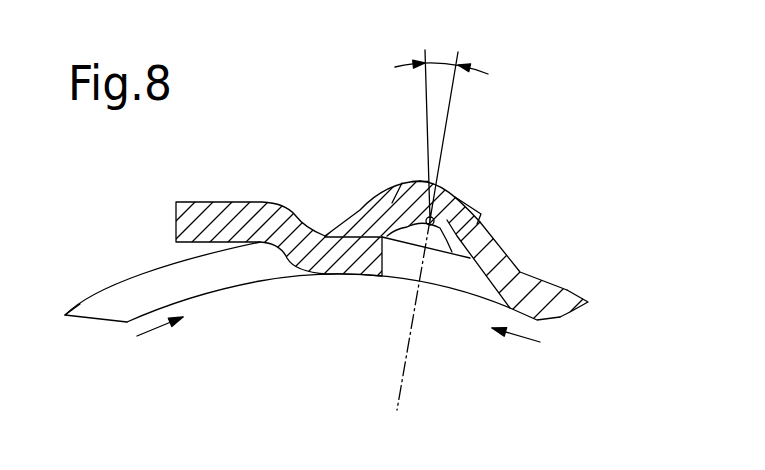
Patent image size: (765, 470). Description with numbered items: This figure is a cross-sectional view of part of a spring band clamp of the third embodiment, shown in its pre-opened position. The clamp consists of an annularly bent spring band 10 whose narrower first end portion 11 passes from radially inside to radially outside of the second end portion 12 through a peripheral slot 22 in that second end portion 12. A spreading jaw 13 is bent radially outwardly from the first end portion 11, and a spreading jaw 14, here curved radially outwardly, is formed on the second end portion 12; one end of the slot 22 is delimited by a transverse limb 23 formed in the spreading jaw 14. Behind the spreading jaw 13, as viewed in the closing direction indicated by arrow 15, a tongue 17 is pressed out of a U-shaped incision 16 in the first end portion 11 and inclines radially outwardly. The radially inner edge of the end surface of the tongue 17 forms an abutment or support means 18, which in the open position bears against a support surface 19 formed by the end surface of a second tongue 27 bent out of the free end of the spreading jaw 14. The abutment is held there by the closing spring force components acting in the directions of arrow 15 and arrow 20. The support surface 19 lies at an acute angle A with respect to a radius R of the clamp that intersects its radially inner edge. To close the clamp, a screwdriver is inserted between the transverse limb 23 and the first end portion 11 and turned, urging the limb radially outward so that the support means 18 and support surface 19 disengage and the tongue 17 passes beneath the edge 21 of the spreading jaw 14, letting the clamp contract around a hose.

The spring band 10 is at (305, 288).
The first end portion 11 is at (568, 293).
The second end portion 12 is at (86, 301).
The spreading jaw 13 is at (220, 201).
The spreading jaw 14 is at (433, 217).
The arrow 15 is at (513, 339).
The U-shaped incision 16 is at (452, 273).
The tongue 17 is at (495, 246).
The abutment or support means 18 is at (458, 213).
The support surface 19 is at (433, 218).
The arrow 20 is at (152, 332).
The edge 21 is at (417, 243).
The peripheral slot 22 is at (143, 288).
The transverse limb 23 is at (393, 198).
The second tongue 27 is at (421, 180).
The acute angle A is at (441, 122).
The radius R is at (405, 382).